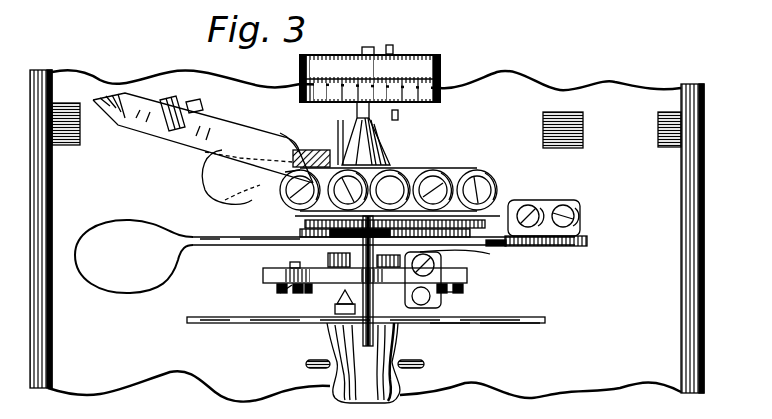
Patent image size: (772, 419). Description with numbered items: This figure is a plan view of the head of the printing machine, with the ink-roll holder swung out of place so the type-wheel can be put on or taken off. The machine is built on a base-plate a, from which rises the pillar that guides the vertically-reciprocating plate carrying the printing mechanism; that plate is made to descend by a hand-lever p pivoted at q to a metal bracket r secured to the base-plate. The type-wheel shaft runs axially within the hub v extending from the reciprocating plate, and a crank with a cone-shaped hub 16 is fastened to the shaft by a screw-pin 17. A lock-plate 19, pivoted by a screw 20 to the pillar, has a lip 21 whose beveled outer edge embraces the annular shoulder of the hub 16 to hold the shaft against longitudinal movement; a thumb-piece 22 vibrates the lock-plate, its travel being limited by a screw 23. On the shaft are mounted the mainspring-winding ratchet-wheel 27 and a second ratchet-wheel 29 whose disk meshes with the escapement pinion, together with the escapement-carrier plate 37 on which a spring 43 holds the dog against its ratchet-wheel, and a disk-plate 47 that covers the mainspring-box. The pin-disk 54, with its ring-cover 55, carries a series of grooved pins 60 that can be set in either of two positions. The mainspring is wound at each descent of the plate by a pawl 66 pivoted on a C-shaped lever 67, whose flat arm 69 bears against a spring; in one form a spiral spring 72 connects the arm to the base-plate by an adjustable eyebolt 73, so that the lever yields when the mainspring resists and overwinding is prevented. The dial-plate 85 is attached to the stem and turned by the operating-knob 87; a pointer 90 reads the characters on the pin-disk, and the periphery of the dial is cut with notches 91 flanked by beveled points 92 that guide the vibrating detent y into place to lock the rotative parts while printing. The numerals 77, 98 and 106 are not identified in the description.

The spiral spring 72 is at (378, 42).
The adjustable eyebolt 73 is at (448, 56).
The cone-shaped hub 16 is at (380, 124).
The screw-pin 17 is at (400, 114).
The stylus arm 98 is at (203, 138).
The screw 20 is at (224, 114).
The lip 21 is at (258, 111).
The thumb-piece 22 is at (218, 176).
The lock-plate 19 is at (331, 157).
The screw 23 is at (312, 182).
The mainspring-winding ratchet-wheel 27 is at (414, 188).
The ratchet-wheel 29 is at (442, 188).
The C-shaped lever 67 is at (484, 186).
The marked wheel 106 is at (390, 190).
The pawl 66 is at (332, 225).
The key block 77 is at (498, 197).
The flat arm 69 is at (512, 228).
The spring 43 is at (466, 257).
The plate 37 is at (330, 238).
The pins 60 is at (496, 289).
The pin-disk 54 is at (264, 276).
The ring-cover 55 is at (273, 300).
The pointer 90 is at (336, 305).
The disk-plate 47 is at (441, 292).
The dial-plate 85 is at (546, 320).
The points 92 is at (472, 323).
The notches 91 is at (506, 323).
The operating-knob 87 is at (353, 363).
The base-plate a is at (658, 122).
The hand-lever p is at (325, 256).
The hub v is at (388, 173).
The metal bracket r is at (596, 222).
The pivot q is at (545, 273).
The vibrating detent y is at (402, 332).